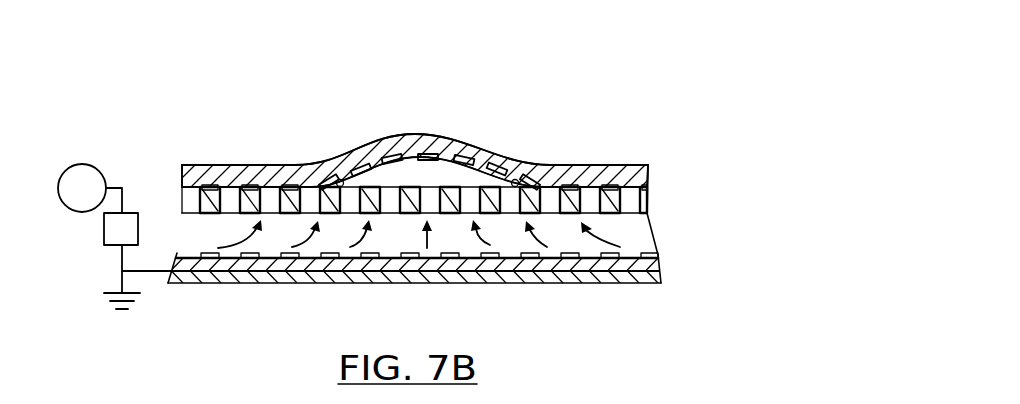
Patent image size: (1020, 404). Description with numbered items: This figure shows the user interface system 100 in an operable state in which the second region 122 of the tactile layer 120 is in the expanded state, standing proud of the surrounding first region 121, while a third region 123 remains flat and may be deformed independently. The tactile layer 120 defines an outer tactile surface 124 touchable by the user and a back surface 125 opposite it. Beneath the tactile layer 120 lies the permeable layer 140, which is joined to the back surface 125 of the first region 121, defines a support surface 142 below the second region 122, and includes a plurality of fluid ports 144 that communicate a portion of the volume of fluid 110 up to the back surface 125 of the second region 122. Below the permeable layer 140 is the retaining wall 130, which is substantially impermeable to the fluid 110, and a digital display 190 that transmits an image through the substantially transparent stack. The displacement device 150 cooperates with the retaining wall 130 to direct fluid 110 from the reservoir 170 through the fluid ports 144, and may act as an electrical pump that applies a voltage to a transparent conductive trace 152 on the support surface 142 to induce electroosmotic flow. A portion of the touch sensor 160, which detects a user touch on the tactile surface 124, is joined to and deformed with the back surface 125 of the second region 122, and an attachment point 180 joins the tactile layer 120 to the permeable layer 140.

The user interface system 100 is at (117, 101).
The volume of fluid 110 is at (410, 172).
The tactile layer 120 is at (635, 178).
The first region 121 is at (267, 150).
The second region 122 is at (395, 125).
The third region 123 is at (602, 154).
The tactile surface 124 is at (641, 165).
The back surface 125 is at (479, 168).
The retaining wall 130 is at (618, 284).
The permeable layer 140 is at (612, 234).
The support surface 142 is at (448, 192).
The fluid ports 144 is at (387, 200).
The displacement device 150 is at (113, 229).
The conductive trace 152 is at (210, 252).
The touch sensor 160 is at (250, 185).
The reservoir 170 is at (448, 242).
The attachment point 180 is at (337, 180).
The digital display 190 is at (528, 276).